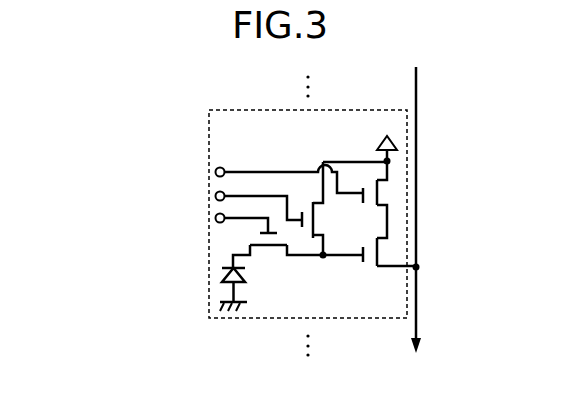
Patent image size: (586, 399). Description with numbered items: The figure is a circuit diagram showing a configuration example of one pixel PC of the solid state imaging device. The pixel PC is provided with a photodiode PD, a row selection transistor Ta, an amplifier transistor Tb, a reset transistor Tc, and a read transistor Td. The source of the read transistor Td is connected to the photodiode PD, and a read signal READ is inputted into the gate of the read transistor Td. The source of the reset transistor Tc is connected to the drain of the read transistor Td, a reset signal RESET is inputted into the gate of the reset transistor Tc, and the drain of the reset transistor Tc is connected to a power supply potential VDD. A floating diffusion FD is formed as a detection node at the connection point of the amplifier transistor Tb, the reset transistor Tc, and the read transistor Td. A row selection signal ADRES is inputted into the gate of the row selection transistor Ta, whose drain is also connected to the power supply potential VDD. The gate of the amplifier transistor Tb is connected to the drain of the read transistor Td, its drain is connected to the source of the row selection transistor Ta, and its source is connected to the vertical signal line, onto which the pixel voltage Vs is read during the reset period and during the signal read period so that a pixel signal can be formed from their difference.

The pixel PC is at (208, 117).
The row selection signal ADRES is at (252, 177).
The reset signal RESET is at (223, 203).
The read signal READ is at (210, 220).
The power supply potential VDD is at (376, 138).
The row selection transistor Ta is at (378, 193).
The amplifier transistor Tb is at (378, 252).
The reset transistor Tc is at (317, 218).
The read transistor Td is at (268, 250).
The photodiode PD is at (222, 270).
The floating diffusion FD is at (324, 262).
The pixel voltage Vs is at (415, 223).